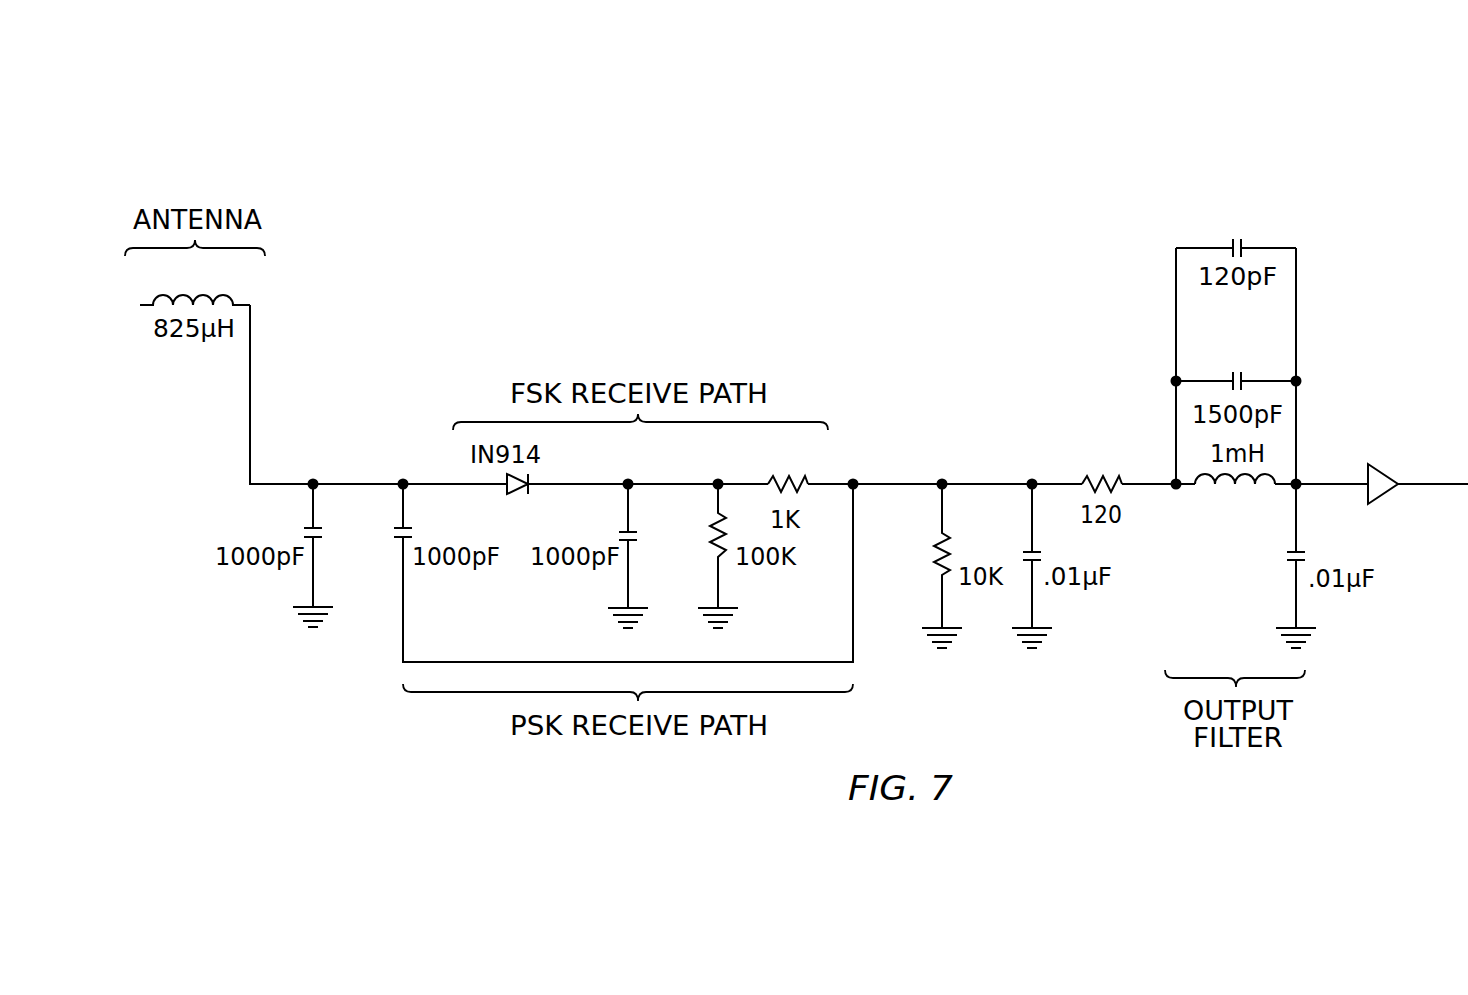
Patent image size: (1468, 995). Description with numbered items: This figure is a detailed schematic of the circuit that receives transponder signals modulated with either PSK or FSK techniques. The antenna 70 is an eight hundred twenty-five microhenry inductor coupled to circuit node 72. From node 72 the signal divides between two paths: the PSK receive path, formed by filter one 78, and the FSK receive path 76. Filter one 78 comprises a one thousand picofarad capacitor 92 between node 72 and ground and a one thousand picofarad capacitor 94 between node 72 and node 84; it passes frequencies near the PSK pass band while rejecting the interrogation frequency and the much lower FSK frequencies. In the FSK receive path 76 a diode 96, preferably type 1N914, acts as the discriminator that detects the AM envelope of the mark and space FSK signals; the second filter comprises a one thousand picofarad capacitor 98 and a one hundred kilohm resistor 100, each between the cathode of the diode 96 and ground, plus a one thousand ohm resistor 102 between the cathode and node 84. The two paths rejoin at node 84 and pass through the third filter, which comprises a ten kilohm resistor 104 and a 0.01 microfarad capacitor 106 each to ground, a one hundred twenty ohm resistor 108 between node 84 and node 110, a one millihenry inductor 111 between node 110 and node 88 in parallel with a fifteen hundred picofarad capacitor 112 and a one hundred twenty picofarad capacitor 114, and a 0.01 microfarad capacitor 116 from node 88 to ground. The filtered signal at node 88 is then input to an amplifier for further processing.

The antenna 70 is at (228, 294).
The circuit node 72 is at (313, 482).
The FSK receive path 76 is at (762, 345).
The filter no. 1 78 is at (403, 482).
The node 1 84 is at (853, 482).
The node 2 88 is at (1299, 482).
The capacitor 92 is at (304, 532).
The capacitor 94 is at (394, 534).
The diode 96 is at (530, 479).
The capacitor 98 is at (619, 535).
The resistor 100 is at (709, 530).
The resistor 102 is at (781, 477).
The resistor 104 is at (933, 552).
The capacitor 106 is at (1023, 553).
The resistor 108 is at (1100, 477).
The node 110 is at (1176, 488).
The inductor 111 is at (1233, 486).
The capacitor 112 is at (1235, 370).
The capacitor 114 is at (1235, 238).
The capacitor 116 is at (1286, 553).